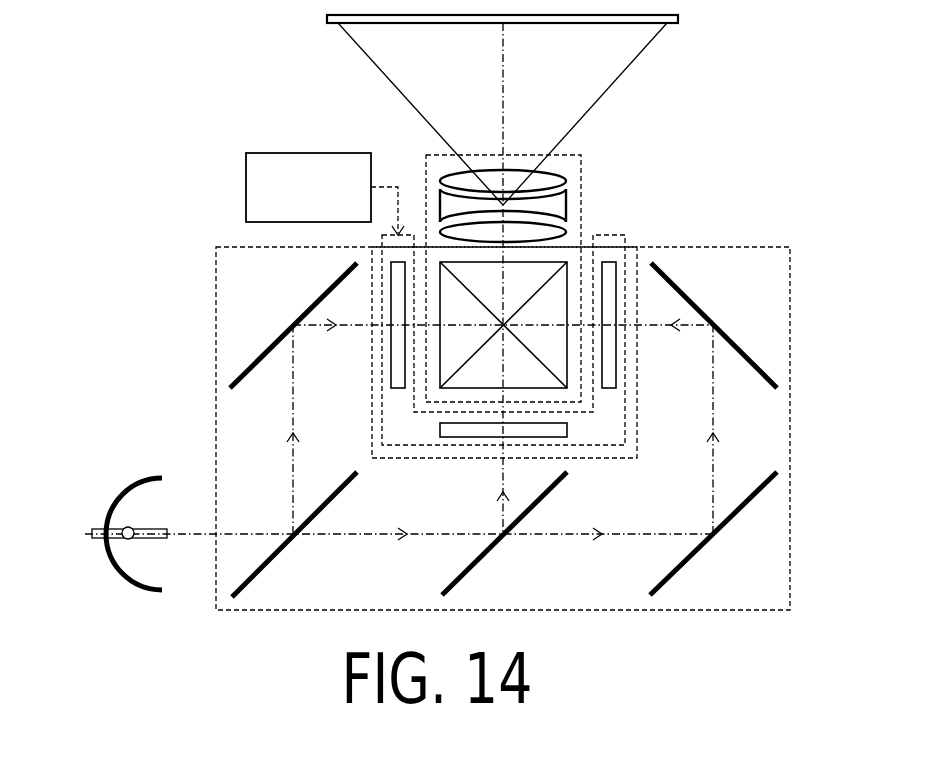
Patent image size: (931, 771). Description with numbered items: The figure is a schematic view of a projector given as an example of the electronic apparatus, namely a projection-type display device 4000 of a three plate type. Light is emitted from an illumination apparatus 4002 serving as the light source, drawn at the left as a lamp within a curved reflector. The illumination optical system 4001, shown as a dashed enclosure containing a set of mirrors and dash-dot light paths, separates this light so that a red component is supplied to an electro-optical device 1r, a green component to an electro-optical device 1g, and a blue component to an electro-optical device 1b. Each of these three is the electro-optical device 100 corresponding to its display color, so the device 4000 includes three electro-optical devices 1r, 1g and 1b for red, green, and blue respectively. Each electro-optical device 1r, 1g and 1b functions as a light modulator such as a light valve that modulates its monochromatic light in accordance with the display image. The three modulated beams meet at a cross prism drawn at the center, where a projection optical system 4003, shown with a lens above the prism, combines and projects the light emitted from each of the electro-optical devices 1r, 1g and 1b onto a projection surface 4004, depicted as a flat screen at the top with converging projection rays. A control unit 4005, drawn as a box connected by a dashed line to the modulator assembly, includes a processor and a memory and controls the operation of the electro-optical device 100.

The projection-type display device 4000 is at (437, 312).
The illumination optical system 4001 is at (756, 247).
The illumination apparatus 4002 is at (141, 478).
The projection optical system 4003 is at (581, 197).
The projection surface 4004 is at (553, 23).
The control unit 4005 is at (246, 197).
The electro-optical device 100 is at (503, 379).
The electro-optical device 1r is at (392, 377).
The electro-optical device 1g is at (447, 437).
The electro-optical device 1b is at (616, 365).